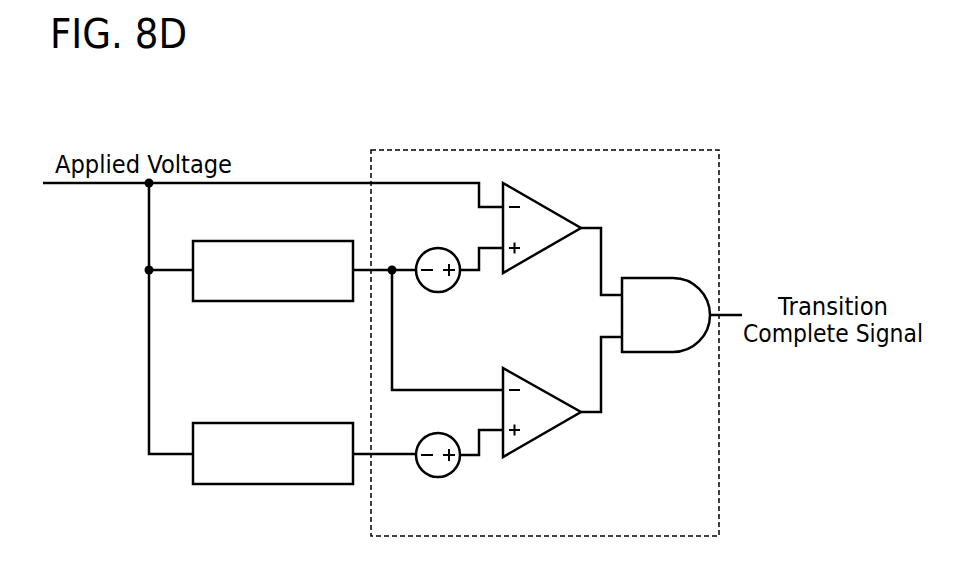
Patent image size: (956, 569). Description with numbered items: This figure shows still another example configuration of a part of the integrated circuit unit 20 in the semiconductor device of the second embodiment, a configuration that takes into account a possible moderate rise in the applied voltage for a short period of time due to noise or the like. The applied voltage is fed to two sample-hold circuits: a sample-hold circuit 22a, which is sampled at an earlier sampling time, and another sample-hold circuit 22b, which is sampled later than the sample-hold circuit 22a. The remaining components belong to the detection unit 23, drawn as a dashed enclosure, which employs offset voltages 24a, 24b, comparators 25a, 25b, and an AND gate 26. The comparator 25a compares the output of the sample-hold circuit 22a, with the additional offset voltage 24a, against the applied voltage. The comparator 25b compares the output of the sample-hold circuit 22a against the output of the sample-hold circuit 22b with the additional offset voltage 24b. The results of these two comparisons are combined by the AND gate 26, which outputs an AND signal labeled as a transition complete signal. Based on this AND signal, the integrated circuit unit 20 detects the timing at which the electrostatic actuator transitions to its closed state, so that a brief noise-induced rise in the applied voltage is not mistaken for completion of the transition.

The integrated circuit unit 20 is at (666, 131).
The sample-hold circuit 22a is at (273, 302).
The sample-hold circuit 22b is at (273, 485).
The detection unit 23 is at (580, 150).
The offset voltage 24a is at (438, 293).
The offset voltage 24b is at (438, 478).
The comparator 25a is at (550, 205).
The comparator 25b is at (550, 390).
The AND gate 26 is at (657, 278).